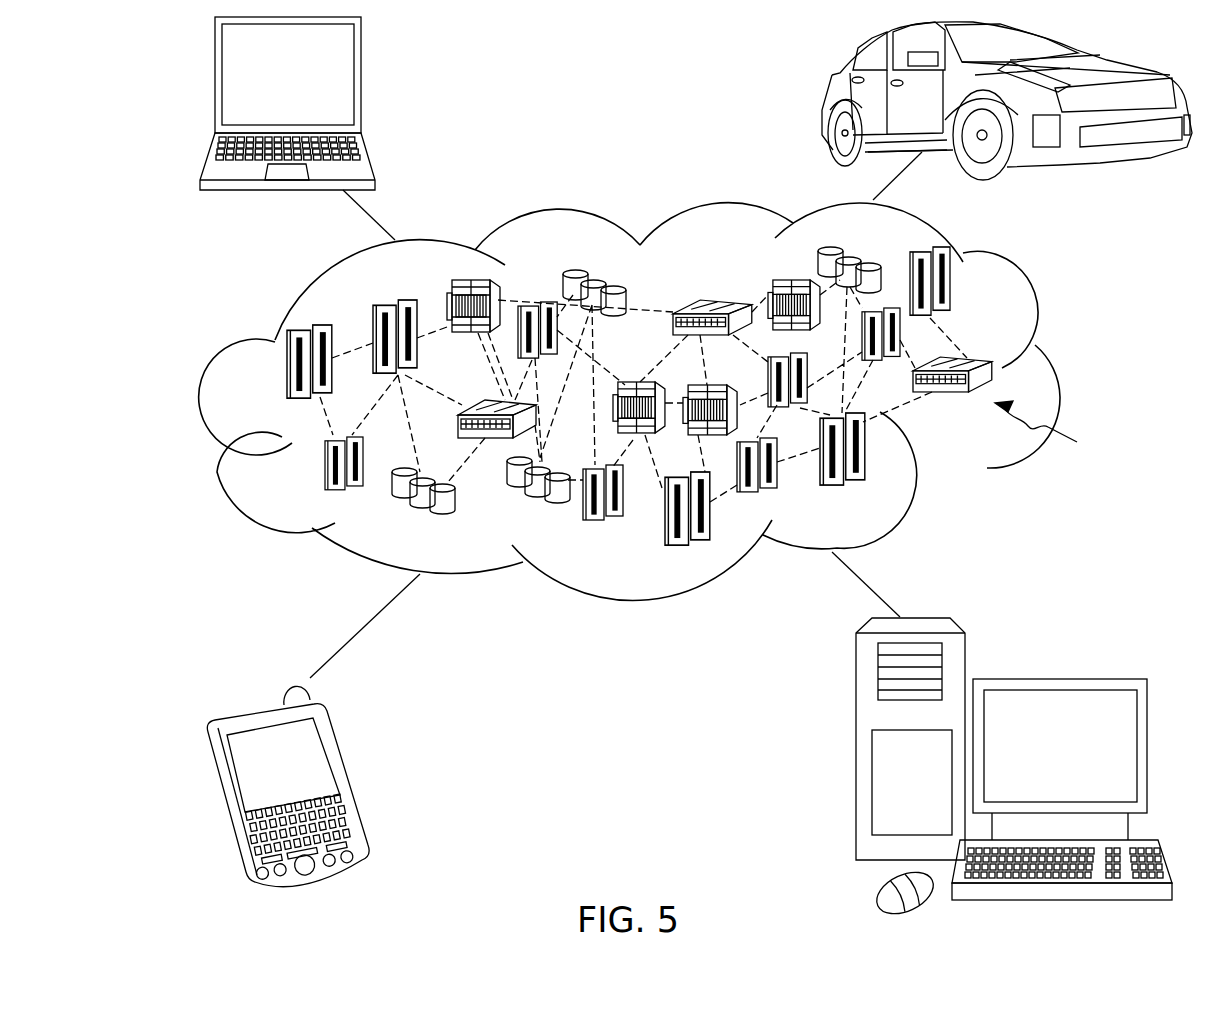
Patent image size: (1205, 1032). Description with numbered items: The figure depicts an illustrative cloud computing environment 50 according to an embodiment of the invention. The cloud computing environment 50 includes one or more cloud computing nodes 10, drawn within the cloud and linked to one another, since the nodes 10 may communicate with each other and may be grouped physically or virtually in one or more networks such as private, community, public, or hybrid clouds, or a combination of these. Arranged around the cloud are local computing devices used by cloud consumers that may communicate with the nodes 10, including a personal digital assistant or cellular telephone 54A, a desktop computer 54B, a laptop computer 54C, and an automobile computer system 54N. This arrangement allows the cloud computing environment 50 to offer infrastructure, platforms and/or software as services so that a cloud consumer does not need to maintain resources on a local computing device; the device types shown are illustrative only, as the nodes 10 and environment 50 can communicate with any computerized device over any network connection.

The cloud computing nodes 10 is at (1052, 427).
The cloud computing environment 50 is at (1057, 372).
The personal digital assistant (PDA) or cellular telephone 54A is at (350, 777).
The desktop computer 54B is at (1058, 678).
The laptop computer 54C is at (361, 83).
The automobile computer system 54N is at (825, 98).